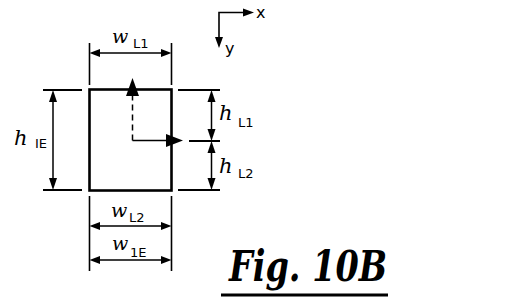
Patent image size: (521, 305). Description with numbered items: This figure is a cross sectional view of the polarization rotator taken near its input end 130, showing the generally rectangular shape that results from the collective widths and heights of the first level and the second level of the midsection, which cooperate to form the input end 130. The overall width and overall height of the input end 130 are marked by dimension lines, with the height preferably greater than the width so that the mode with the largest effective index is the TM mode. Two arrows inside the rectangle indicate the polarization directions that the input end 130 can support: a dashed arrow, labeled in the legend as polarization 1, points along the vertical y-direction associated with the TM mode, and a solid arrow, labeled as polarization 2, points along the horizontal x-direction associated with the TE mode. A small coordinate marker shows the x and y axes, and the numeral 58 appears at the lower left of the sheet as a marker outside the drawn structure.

The input end 130 is at (105, 163).
The polarization 1 (dashed arrow) 1 is at (282, 153).
The polarization 2 (solid arrow) 2 is at (281, 189).
The sheet marker 58 is at (14, 272).